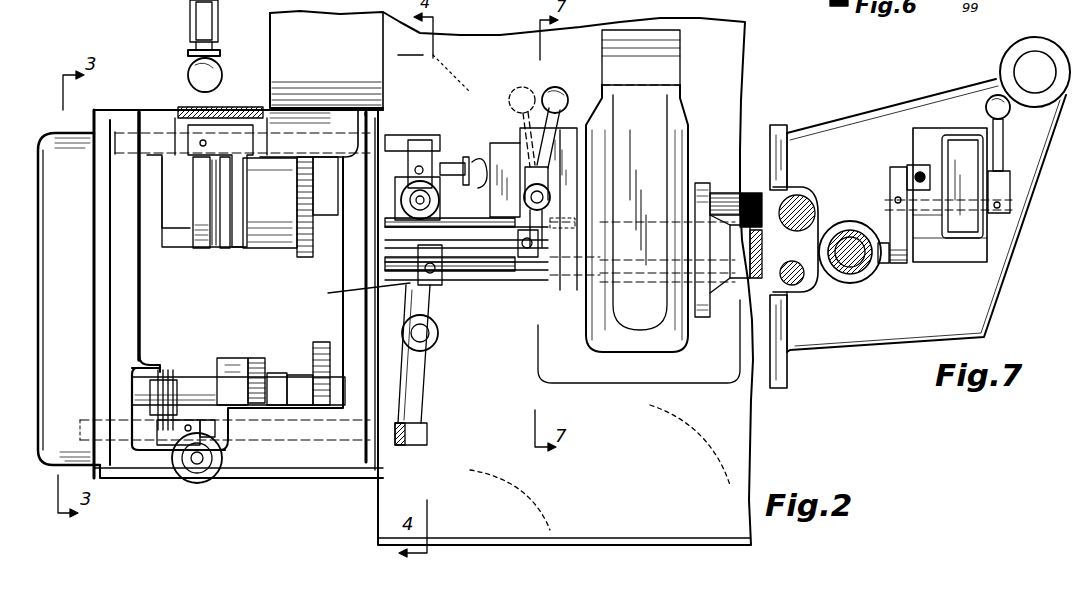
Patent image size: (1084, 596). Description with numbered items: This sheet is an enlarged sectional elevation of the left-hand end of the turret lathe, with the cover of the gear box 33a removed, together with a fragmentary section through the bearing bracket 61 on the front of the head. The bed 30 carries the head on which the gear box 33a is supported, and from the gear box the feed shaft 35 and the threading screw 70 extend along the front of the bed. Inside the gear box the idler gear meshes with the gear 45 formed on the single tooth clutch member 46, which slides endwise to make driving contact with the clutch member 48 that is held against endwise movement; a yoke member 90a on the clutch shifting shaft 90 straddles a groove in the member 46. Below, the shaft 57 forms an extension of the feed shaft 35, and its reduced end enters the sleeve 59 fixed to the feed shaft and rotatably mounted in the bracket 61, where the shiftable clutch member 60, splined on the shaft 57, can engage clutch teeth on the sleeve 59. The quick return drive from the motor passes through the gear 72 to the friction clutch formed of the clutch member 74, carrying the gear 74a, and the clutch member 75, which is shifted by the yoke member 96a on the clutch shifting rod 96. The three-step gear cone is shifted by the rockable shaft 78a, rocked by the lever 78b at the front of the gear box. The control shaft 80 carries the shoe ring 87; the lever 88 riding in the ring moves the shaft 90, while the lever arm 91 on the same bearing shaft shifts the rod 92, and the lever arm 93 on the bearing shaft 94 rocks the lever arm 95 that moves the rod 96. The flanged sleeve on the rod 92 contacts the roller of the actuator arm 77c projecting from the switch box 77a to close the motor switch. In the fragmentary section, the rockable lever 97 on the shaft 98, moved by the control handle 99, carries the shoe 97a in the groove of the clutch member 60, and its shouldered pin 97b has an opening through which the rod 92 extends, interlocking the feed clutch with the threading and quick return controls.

In FIG. 2, the bed 30 is at (750, 447).
In FIG. 2, the gear box 33a is at (118, 0).
In FIG. 2, the feed shaft 35 is at (755, 238).
In FIG. 7, the feed shaft 35 is at (856, 268).
In FIG. 2, the gear 45 is at (302, 258).
In FIG. 2, the clutch member 46 is at (272, 247).
In FIG. 2, the clutch member 48 is at (200, 235).
In FIG. 2, the shaft 57 is at (483, 283).
In FIG. 7, the sleeve 59 is at (840, 230).
In FIG. 2, the shiftable clutch member 60 is at (520, 283).
In FIG. 7, the shiftable clutch member 60 is at (840, 284).
In FIG. 2, the bearing casting or bracket 61 is at (685, 118).
In FIG. 7, the bearing casting or bracket 61 is at (930, 107).
In FIG. 2, the screw 70 is at (722, 193).
In FIG. 7, the screw 70 is at (801, 197).
In FIG. 2, the gear 72 is at (318, 346).
In FIG. 2, the clutch member 74 is at (274, 376).
In FIG. 2, the gear 74a is at (260, 358).
In FIG. 2, the clutch member 75 is at (203, 380).
In FIG. 2, the switch box 77a is at (500, 148).
In FIG. 2, the actuator arm 77c is at (484, 164).
In FIG. 2, the rockable shaft 78a is at (196, 463).
In FIG. 2, the lever 78b is at (213, 470).
In FIG. 2, the control shaft 80 is at (508, 283).
In FIG. 7, the control shaft 80 is at (795, 288).
In FIG. 2, the shoe ring 87 is at (360, 291).
In FIG. 2, the lever 88 is at (418, 140).
In FIG. 2, the clutch shifting shaft 90 is at (392, 135).
In FIG. 2, the yoke member 90a is at (246, 170).
In FIG. 2, the lever arm 91 is at (438, 186).
In FIG. 2, the rod 92 is at (462, 166).
In FIG. 7, the rod 92 is at (918, 172).
In FIG. 2, the lever arm 93 is at (437, 290).
In FIG. 2, the bearing shaft 94 is at (440, 331).
In FIG. 2, the lever arm 95 is at (432, 373).
In FIG. 2, the clutch shifting rod 96 is at (428, 443).
In FIG. 2, the yoke member 96a is at (182, 423).
In FIG. 7, the rockable lever 97 is at (890, 228).
In FIG. 7, the shoe 97a is at (888, 264).
In FIG. 7, the shouldered pin 97b is at (912, 167).
In FIG. 7, the shaft 98 is at (1012, 207).
In FIG. 2, the control handle 99 is at (556, 98).
In FIG. 7, the control handle 99 is at (1011, 186).